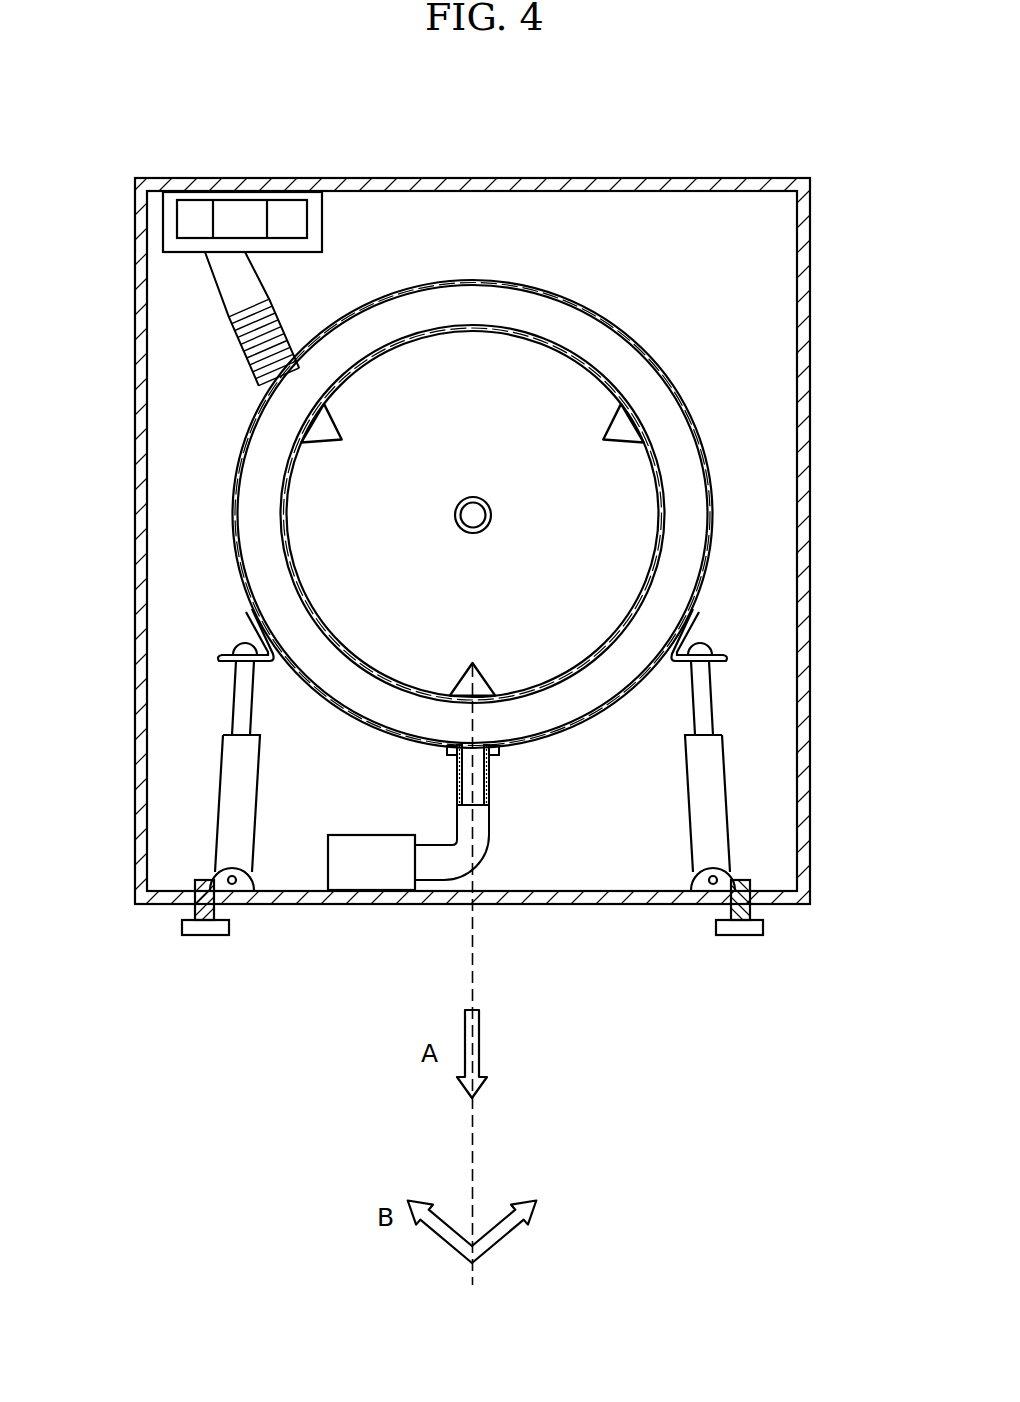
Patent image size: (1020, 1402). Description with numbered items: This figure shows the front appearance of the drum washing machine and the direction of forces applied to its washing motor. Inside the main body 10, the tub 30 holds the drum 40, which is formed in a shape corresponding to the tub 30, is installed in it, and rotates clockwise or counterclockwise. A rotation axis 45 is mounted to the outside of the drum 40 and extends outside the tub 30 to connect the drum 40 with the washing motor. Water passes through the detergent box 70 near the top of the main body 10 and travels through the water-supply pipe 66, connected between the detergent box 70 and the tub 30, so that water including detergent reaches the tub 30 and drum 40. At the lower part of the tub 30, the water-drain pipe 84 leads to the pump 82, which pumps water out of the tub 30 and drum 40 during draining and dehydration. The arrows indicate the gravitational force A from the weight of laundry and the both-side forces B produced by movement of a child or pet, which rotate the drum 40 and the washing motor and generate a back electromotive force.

The main body 10 is at (808, 430).
The tub 30 is at (713, 552).
The drum 40 is at (666, 512).
The rotation axis 45 is at (473, 497).
The water-supply pipe 66 is at (228, 334).
The detergent box 70 is at (292, 196).
The pump 82 is at (351, 875).
The water-drain pipe 84 is at (482, 828).